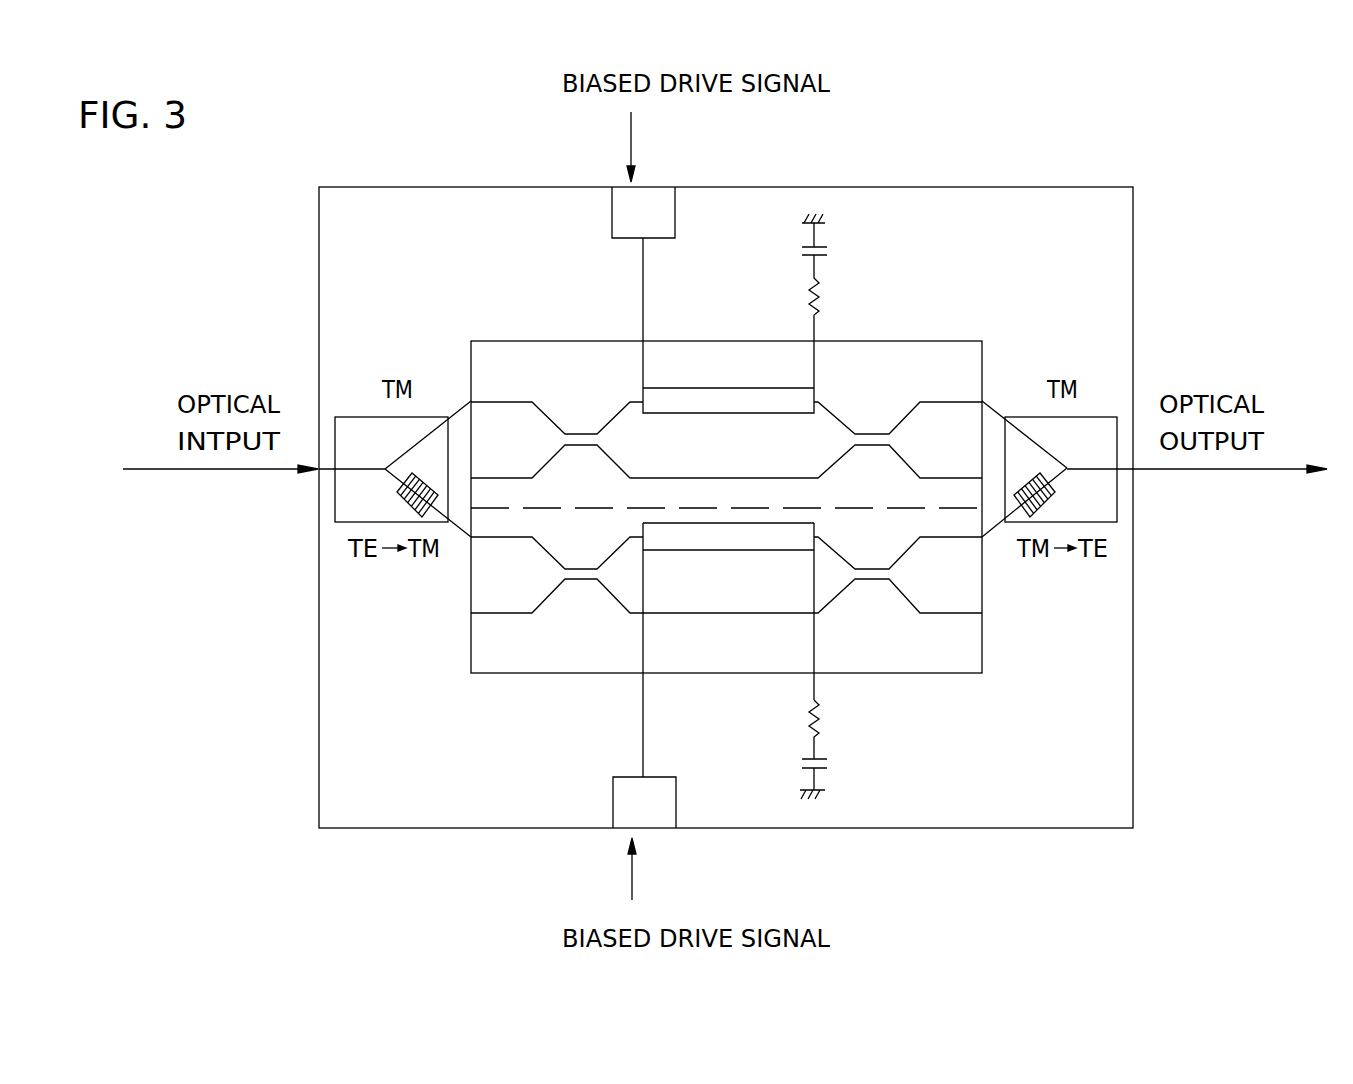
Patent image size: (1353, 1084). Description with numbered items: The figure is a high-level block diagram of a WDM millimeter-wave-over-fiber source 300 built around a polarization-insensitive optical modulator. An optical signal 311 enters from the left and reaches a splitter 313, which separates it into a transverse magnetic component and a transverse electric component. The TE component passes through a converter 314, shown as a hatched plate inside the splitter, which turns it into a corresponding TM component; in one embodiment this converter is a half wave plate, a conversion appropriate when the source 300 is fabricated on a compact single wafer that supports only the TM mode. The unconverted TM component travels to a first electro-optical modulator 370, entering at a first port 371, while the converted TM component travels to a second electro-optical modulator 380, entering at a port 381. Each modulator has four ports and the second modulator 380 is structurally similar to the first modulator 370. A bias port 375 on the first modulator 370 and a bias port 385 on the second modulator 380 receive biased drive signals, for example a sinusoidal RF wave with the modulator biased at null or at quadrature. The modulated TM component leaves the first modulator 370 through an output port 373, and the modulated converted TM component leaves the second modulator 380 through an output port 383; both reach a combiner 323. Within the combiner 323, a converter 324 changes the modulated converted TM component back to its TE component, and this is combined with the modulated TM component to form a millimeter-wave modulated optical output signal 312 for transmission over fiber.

The WDM MWOF source 300 is at (142, 180).
The optical signal 311 is at (173, 473).
The millimeter-wave modulated optical output signal 312 is at (1280, 472).
The splitter 313 is at (348, 418).
The converter 314 is at (395, 494).
The combiner 323 is at (1105, 417).
The converter 324 is at (1057, 494).
The first electro-optical modulator 370 is at (515, 353).
The first port 371 is at (467, 400).
The output port 373 is at (983, 400).
The bias port 375 is at (650, 213).
The second electro-optical modulator 380 is at (515, 660).
The port 381 is at (470, 537).
The output port 383 is at (982, 537).
The bias port 385 is at (651, 813).